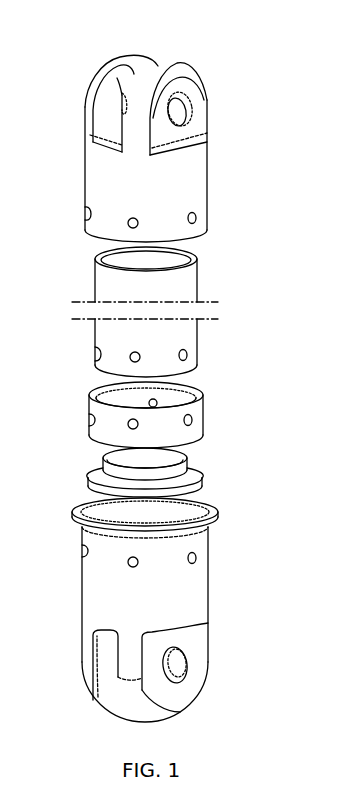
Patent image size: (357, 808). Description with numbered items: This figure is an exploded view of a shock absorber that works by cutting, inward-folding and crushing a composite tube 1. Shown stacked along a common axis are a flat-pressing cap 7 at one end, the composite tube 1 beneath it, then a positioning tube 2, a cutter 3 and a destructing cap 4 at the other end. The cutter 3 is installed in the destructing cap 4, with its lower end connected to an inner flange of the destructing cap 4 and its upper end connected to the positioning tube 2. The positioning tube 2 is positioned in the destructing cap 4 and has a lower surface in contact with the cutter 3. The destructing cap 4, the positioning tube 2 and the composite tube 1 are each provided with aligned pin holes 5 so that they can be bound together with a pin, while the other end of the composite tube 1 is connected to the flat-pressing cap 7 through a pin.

The composite tube 1 is at (183, 342).
The positioning tube 2 is at (177, 420).
The cutter 3 is at (183, 487).
The destructing cap 4 is at (167, 610).
The pin hole 5 is at (78, 512).
The flat-pressing cap 7 is at (185, 183).